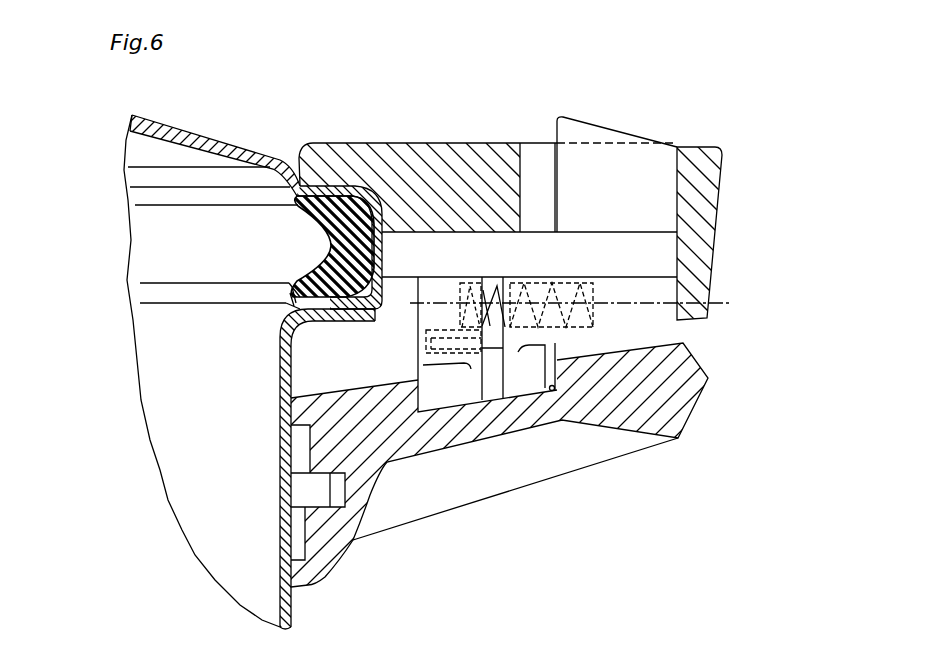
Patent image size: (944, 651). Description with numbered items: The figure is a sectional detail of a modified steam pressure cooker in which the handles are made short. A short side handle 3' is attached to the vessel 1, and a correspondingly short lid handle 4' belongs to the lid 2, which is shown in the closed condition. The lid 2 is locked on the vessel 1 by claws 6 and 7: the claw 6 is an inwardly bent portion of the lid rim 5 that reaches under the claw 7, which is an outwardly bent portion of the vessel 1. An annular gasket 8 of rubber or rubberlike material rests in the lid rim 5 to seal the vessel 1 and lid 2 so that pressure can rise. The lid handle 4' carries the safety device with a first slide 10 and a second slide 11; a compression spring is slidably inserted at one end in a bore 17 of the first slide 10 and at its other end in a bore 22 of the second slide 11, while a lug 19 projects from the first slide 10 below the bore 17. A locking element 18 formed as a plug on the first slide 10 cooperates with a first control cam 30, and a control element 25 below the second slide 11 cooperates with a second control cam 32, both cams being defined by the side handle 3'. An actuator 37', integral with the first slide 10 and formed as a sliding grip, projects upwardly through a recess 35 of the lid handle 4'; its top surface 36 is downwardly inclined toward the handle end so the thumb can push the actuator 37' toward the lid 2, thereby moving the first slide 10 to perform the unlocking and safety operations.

The vessel 1 is at (204, 509).
The lid 2 is at (151, 245).
The side handle 3' is at (491, 465).
The lid handle 4' is at (697, 205).
The lid rim 5 is at (364, 200).
The claw 6 is at (372, 322).
The claw 7 is at (293, 312).
The annular gasket 8 is at (335, 207).
The first slide 10 is at (649, 266).
The second slide 11 is at (440, 385).
The bore 17 is at (575, 297).
The locking element 18 is at (533, 377).
The lug 19 is at (497, 348).
The bore 22 is at (465, 290).
The control element 25 is at (457, 388).
The first control cam 30 is at (556, 389).
The second control cam 32 is at (290, 414).
The recess 35 is at (538, 163).
The top surface 36 is at (587, 126).
The actuator 37' is at (621, 131).